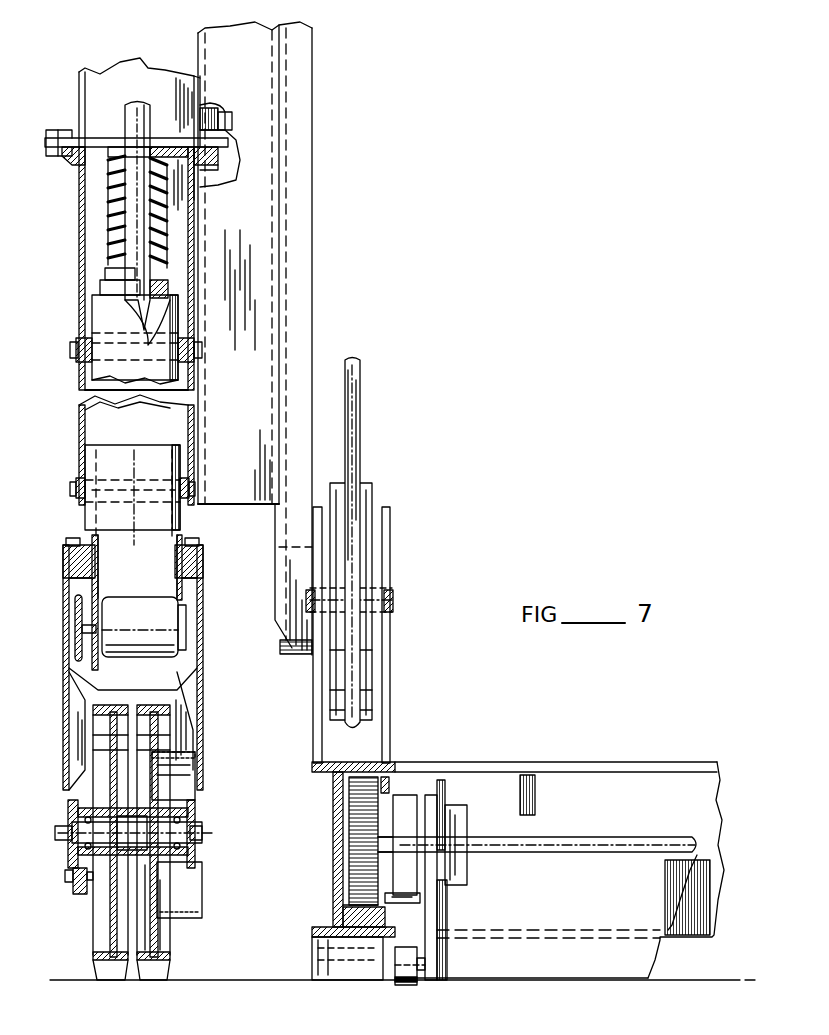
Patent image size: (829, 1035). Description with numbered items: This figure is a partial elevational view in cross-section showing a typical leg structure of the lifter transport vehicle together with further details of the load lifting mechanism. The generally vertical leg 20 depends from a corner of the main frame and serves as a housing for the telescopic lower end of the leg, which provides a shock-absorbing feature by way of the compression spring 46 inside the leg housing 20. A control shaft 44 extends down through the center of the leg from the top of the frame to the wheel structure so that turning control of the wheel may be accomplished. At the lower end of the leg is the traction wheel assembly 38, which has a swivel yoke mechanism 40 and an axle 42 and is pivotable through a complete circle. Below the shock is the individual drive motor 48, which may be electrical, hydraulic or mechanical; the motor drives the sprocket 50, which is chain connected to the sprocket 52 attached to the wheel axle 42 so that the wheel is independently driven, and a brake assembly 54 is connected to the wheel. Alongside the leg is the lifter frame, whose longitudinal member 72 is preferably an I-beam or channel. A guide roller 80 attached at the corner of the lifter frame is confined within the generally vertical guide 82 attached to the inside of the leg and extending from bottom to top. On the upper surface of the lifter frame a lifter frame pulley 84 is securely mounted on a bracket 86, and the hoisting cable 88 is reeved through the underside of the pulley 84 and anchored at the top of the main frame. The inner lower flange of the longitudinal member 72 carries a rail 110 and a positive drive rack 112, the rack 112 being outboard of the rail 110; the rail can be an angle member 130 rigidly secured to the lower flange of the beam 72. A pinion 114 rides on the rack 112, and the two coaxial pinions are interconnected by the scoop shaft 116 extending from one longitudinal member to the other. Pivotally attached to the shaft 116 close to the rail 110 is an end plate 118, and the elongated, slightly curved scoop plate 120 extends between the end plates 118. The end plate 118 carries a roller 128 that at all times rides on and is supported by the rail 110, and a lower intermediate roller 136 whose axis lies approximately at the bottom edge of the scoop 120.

The leg 20 is at (78, 246).
The traction wheel assembly 38 is at (165, 935).
The swivel yoke mechanism 40 is at (65, 656).
The axle 42 is at (205, 834).
The control shaft 44 is at (133, 106).
The shock absorbing compression spring 46 is at (112, 186).
The drive motor 48 is at (178, 610).
The sprocket 50 is at (78, 612).
The sprocket 52 is at (80, 895).
The brake assembly 54 is at (200, 782).
The longitudinal member 72 is at (318, 940).
The guide roller 80 is at (290, 656).
The vertical guide 82 is at (315, 287).
The lifter frame pulley 84 is at (375, 507).
The bracket 86 is at (388, 628).
The hoisting cable 88 is at (360, 394).
The rail 110 is at (410, 900).
The rack 112 is at (355, 937).
The pinion 114 is at (350, 816).
The scoop shaft 116 is at (555, 838).
The end plate 118 is at (437, 797).
The scoop plate 120 is at (568, 978).
The roller 128 is at (410, 796).
The angle member 130 is at (385, 915).
The lower intermediate roller 136 is at (395, 966).